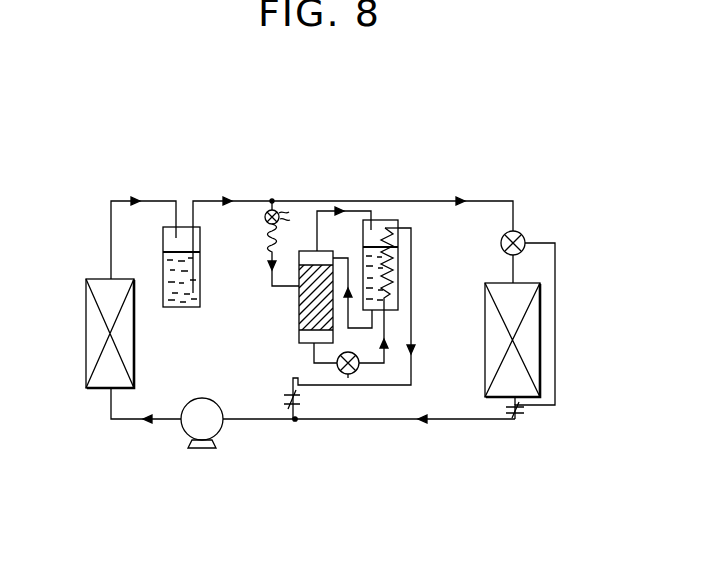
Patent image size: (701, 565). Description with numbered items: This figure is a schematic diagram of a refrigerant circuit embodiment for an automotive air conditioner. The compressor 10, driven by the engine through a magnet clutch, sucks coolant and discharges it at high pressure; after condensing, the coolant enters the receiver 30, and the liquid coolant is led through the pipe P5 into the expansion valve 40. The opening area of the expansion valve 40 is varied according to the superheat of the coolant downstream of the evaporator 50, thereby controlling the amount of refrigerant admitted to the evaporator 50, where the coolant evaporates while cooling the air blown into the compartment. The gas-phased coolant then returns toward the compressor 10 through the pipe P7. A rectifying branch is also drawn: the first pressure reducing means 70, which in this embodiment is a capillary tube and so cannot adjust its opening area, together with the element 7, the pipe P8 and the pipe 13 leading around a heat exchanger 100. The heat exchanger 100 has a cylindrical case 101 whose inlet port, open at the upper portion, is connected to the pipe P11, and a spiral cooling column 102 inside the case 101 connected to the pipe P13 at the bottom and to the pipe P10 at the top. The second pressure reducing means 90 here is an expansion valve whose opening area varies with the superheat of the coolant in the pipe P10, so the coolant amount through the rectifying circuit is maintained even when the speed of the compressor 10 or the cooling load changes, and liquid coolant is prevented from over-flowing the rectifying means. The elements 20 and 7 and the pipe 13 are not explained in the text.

The adsorption column 7 is at (305, 315).
The compressor 10 is at (187, 427).
The outlet pipe of column 13 is at (339, 258).
The heat exchanger 20 is at (92, 334).
The receiver 30 is at (196, 290).
The expansion valve 40 is at (523, 233).
The evaporator 50 is at (530, 351).
The first pressure reducing means 70 is at (270, 237).
The second pressure reducing means 90 is at (354, 372).
The heat exchanger 100 is at (422, 265).
The cylindrical case 101 is at (369, 215).
The spiral cooling column 102 is at (401, 218).
The pipe P5 is at (449, 200).
The pipe P7 is at (395, 422).
The pipe P8 is at (272, 283).
The pipe P10 is at (459, 298).
The pipe P11 is at (323, 207).
The pipe P13 is at (400, 358).